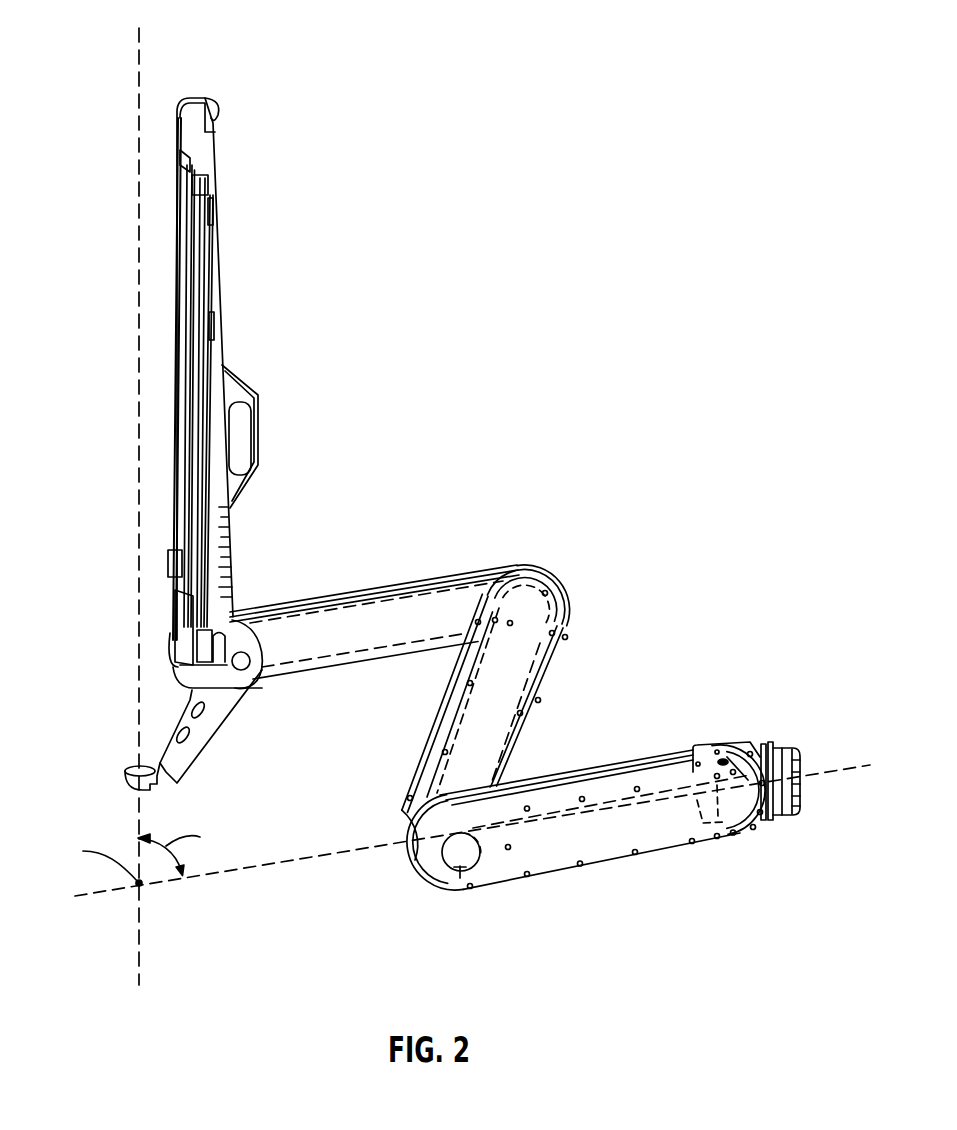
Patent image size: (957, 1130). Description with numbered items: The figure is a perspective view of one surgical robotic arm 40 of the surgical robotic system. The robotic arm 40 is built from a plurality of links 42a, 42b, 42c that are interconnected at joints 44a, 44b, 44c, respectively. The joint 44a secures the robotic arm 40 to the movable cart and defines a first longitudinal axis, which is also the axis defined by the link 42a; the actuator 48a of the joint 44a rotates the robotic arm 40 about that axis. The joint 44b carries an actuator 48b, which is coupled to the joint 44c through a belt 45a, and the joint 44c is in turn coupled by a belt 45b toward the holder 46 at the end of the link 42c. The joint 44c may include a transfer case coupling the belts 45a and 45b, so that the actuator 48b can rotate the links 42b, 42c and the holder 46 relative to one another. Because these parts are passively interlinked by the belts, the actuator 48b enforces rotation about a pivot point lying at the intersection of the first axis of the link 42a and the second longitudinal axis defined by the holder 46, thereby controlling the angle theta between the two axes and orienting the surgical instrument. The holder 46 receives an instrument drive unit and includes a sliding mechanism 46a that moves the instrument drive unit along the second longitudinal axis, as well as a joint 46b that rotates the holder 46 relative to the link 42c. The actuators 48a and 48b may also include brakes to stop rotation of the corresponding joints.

The robotic arm 40 is at (252, 38).
The holder 46 is at (207, 153).
The sliding mechanism 46a is at (178, 302).
The joint 46b is at (232, 624).
The link 42c is at (332, 596).
The belt 45b is at (450, 583).
The joint 44c is at (557, 618).
The belt 45a is at (533, 663).
The link 42b is at (493, 753).
The actuator 48a is at (770, 750).
The joint 44a is at (788, 816).
The actuator 48b is at (428, 854).
The joint 44b is at (460, 872).
The link 42a is at (611, 842).